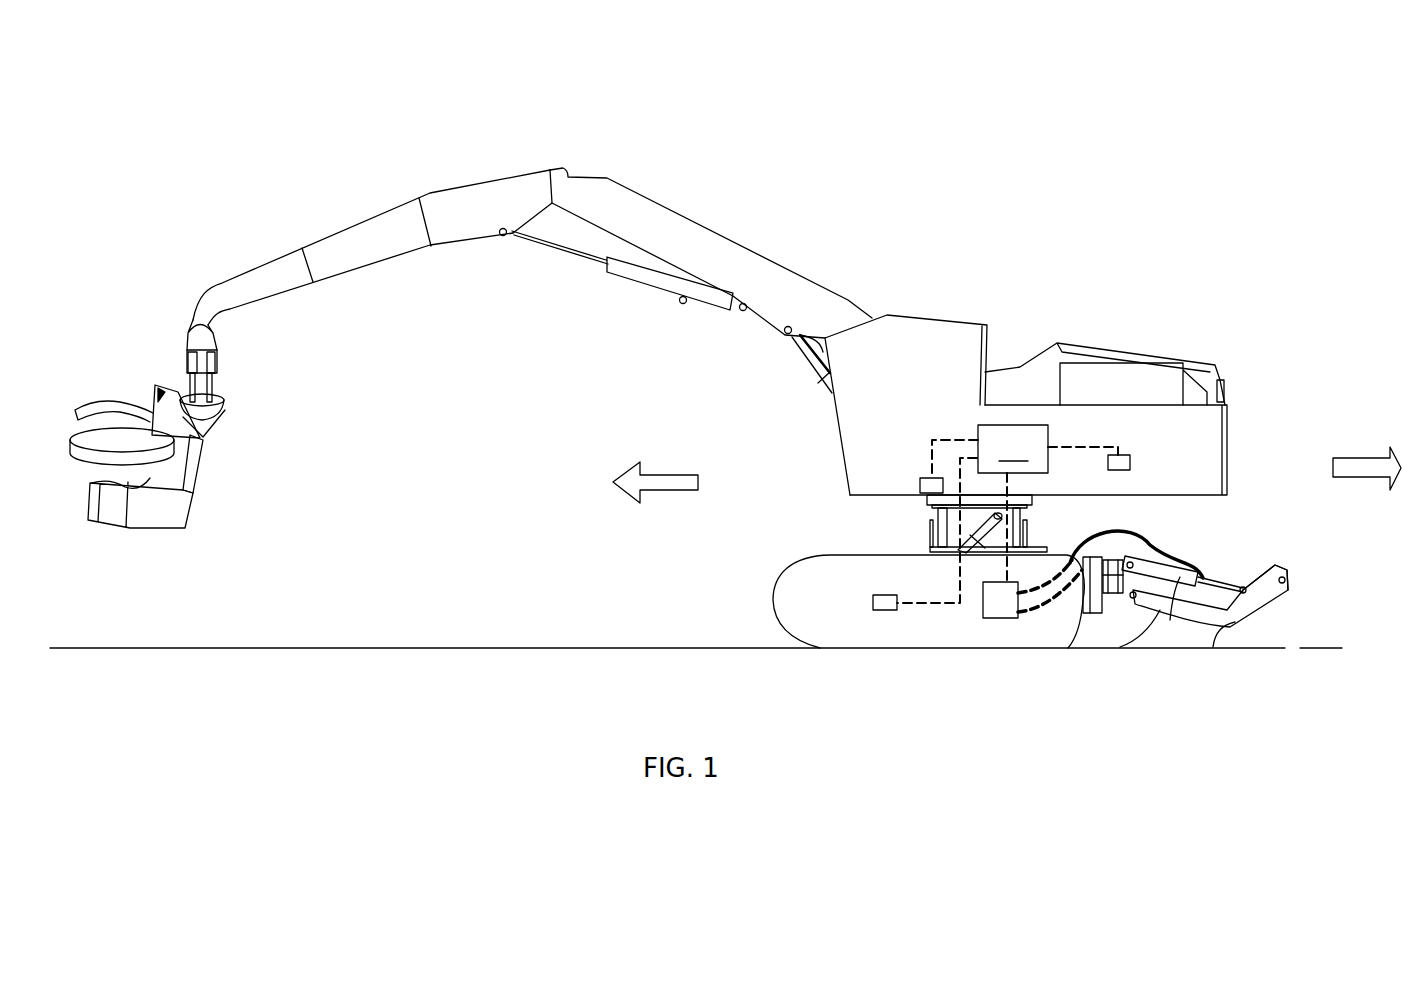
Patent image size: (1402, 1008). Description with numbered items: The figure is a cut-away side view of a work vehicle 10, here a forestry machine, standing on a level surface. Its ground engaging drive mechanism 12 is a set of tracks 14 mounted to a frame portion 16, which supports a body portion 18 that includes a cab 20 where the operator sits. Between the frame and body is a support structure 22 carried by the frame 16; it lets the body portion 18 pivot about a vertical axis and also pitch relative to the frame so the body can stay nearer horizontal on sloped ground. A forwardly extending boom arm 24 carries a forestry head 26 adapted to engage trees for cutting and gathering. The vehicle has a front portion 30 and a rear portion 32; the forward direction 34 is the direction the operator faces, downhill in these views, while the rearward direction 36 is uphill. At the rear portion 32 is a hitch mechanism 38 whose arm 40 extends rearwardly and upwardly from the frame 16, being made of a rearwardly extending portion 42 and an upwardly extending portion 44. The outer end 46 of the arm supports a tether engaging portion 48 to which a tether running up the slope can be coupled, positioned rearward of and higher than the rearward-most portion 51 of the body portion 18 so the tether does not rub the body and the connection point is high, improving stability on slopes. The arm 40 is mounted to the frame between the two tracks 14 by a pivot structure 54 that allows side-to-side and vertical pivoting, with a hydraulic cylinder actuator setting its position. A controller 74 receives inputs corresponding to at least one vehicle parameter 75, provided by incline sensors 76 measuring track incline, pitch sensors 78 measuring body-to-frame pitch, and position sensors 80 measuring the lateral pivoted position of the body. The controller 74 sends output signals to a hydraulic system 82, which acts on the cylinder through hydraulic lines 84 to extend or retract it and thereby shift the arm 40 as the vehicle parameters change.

The work vehicle 10 is at (981, 92).
The ground engaging drive mechanism 12 is at (719, 596).
The tracks 14 is at (792, 562).
The frame portion 16 is at (1050, 533).
The body portion 18 is at (1227, 420).
The cab 20 is at (933, 317).
The support structure 22 is at (912, 545).
The boom arm 24 is at (470, 172).
The forestry head 26 is at (192, 510).
The front portion 30 is at (818, 459).
The rear portion 32 is at (1265, 450).
The forward direction 34 is at (668, 485).
The rearward direction 36 is at (1360, 472).
The hitch mechanism 38 is at (1134, 622).
The arm 40 is at (1215, 630).
The rearwardly extending portion 42 is at (1179, 632).
The upwardly extending portion 44 is at (1267, 610).
The outer end 46 is at (1275, 565).
The tether engaging portion 48 is at (1293, 577).
The rearward-most portion 51 is at (1227, 482).
The pivot structure 54 is at (1117, 620).
The controller 74 is at (1013, 449).
The vehicle parameter 75 is at (955, 437).
The incline sensors 76 is at (873, 602).
The pitch sensors 78 is at (1120, 470).
The position sensors 80 is at (920, 482).
The hydraulic system 82 is at (1002, 634).
The hydraulic lines 84 is at (1200, 550).